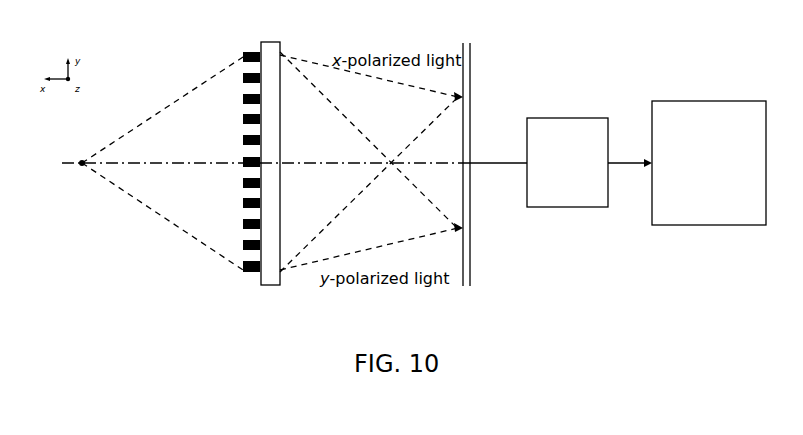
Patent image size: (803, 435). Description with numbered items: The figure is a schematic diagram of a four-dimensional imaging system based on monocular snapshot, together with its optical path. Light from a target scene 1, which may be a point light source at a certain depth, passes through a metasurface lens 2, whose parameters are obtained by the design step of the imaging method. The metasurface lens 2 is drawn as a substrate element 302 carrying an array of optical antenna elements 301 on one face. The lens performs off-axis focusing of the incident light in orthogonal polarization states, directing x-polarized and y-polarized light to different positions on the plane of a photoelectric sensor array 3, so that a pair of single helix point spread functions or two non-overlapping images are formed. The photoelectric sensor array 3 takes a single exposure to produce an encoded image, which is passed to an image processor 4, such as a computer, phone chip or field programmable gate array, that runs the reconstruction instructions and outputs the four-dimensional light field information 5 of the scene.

The target scene 1 is at (82, 163).
The metasurface lens 2 is at (229, 158).
The nanostructure units 301 is at (243, 57).
The substrate 302 is at (270, 42).
The photoelectric sensor array 3 is at (465, 286).
The image processor 4 is at (565, 207).
The four-dimensional light field information 5 is at (713, 225).